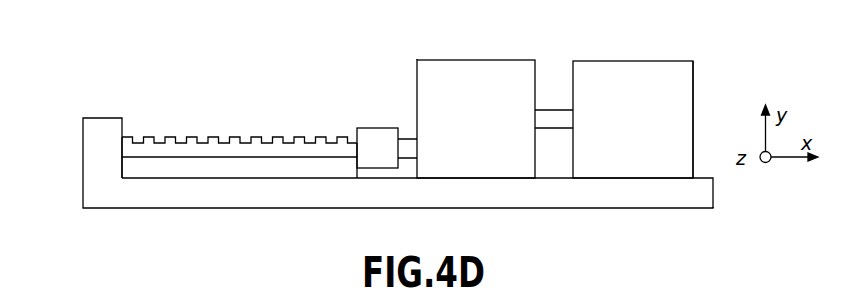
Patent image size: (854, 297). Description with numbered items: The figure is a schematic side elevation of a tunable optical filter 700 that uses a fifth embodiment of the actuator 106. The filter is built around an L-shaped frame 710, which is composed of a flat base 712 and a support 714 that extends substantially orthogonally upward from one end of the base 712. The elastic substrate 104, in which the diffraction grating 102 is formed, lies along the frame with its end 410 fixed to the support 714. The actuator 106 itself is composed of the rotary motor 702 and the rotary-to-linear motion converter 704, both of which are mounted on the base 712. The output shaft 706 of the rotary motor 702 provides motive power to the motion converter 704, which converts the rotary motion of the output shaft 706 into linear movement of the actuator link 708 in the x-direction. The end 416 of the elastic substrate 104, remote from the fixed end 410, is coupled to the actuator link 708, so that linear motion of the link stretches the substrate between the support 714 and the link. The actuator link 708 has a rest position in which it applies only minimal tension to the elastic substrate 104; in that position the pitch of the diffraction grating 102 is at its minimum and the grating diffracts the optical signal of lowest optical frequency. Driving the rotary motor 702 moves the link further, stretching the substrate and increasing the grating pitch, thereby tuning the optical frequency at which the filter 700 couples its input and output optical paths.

The tunable optical filter 700 is at (642, 48).
The actuator 106 is at (700, 92).
The rotary motor 702 is at (633, 119).
The rotary-to-linear motion converter 704 is at (476, 119).
The output shaft 706 is at (556, 109).
The actuator link 708 is at (407, 138).
The end of the elastic substrate 416 is at (360, 148).
The end of the elastic substrate 410 is at (120, 145).
The diffraction grating 102 is at (223, 137).
The elastic substrate 104 is at (263, 150).
The L-shaped frame 710 is at (82, 152).
The support 714 is at (93, 172).
The base 712 is at (178, 190).